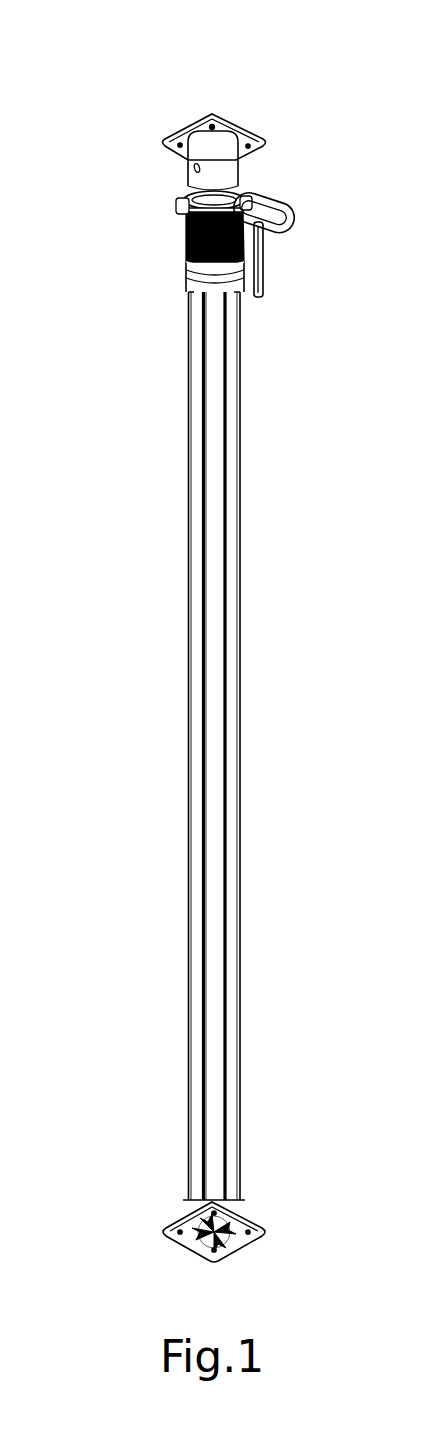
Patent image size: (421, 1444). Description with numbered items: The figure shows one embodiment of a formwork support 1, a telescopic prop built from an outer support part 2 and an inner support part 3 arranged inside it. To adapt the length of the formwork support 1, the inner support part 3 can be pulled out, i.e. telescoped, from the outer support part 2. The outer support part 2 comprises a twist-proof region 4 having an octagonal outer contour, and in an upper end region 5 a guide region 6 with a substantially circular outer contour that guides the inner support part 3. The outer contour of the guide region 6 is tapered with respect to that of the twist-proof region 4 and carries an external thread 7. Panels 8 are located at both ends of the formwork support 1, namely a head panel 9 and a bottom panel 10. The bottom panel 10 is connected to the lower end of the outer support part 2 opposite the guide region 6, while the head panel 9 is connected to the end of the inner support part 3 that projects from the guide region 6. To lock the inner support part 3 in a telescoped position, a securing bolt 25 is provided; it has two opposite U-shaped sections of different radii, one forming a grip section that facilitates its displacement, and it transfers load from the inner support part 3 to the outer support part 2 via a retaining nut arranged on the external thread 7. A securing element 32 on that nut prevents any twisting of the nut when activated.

The formwork support 1 is at (147, 495).
The outer support part 2 is at (217, 503).
The inner support part 3 is at (227, 152).
The twist-proof region 4 is at (213, 690).
The upper end region 5 is at (178, 273).
The guide region 6 is at (240, 248).
The external thread 7 is at (188, 255).
The panels 8 is at (210, 112).
The head panel 9 is at (243, 120).
The bottom panel 10 is at (250, 1218).
The securing bolt 25 is at (292, 219).
The securing element 32 is at (263, 295).